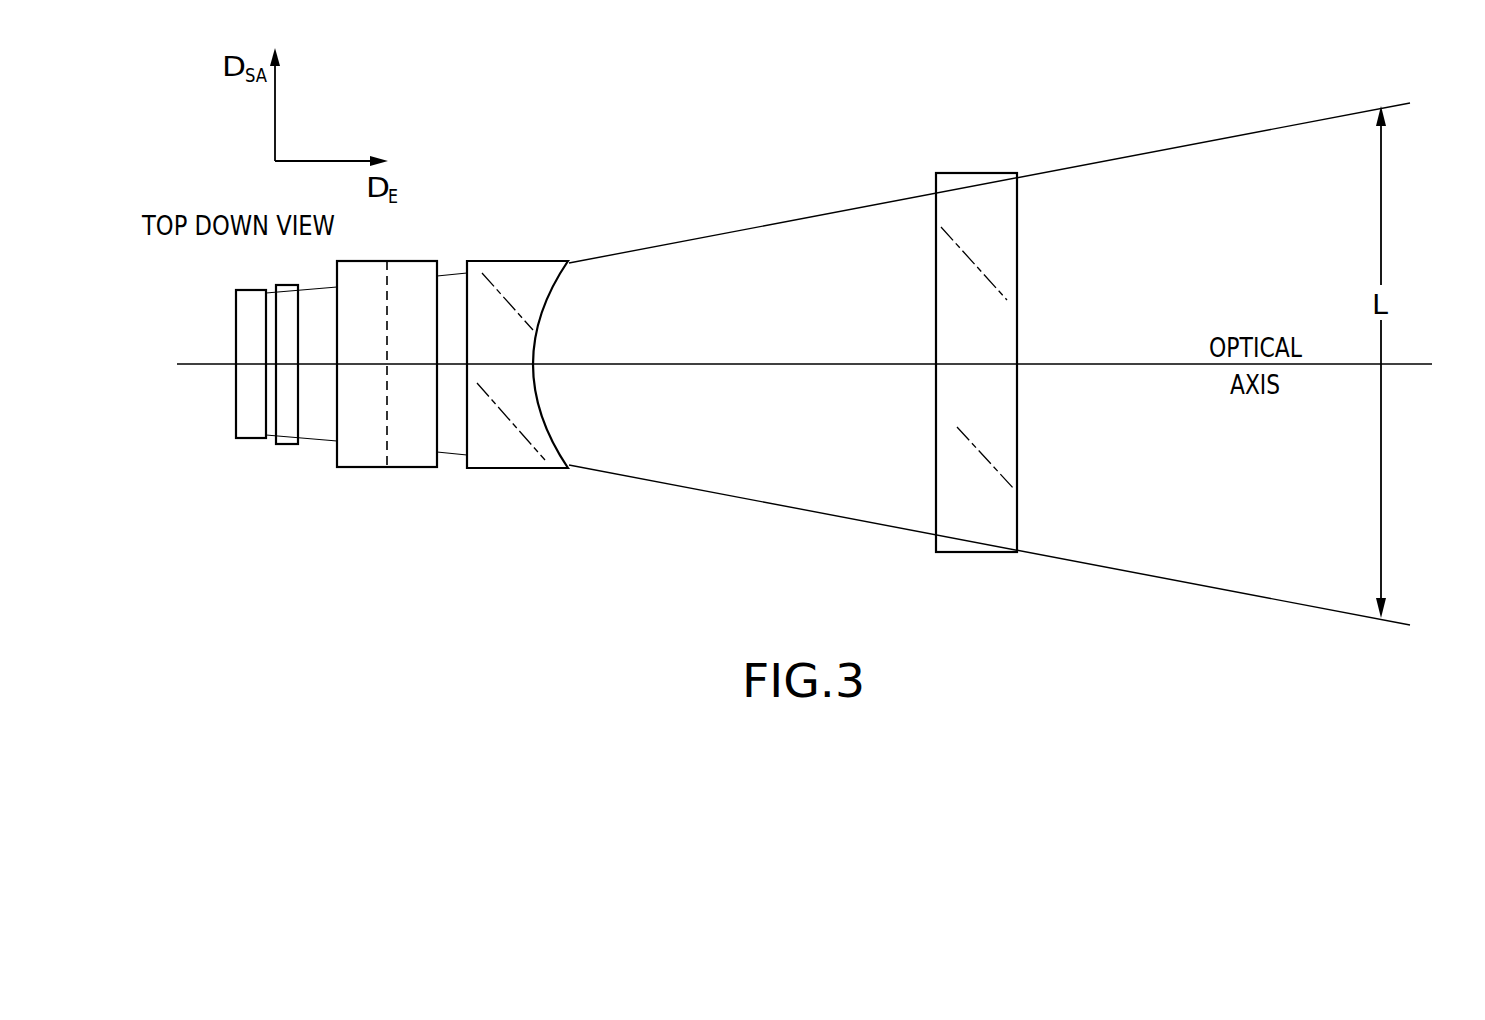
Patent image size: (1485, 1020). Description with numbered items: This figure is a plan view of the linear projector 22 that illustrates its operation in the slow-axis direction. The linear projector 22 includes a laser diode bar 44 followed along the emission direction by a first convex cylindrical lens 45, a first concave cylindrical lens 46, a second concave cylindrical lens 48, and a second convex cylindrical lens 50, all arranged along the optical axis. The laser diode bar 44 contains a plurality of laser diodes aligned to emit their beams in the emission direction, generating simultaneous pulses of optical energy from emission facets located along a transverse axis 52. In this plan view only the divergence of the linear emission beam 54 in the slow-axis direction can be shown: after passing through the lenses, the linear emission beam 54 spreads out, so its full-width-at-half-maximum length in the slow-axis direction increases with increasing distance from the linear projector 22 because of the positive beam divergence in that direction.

The linear projector 22 is at (819, 132).
The laser diode bar 44 is at (236, 332).
The first convex cylindrical lens 45 is at (298, 310).
The first concave cylindrical lens 46 is at (413, 482).
The second concave cylindrical lens 48 is at (517, 468).
The second convex cylindrical lens 50 is at (970, 510).
The transverse axis 52 is at (271, 398).
The linear emission beam 54 is at (1133, 155).